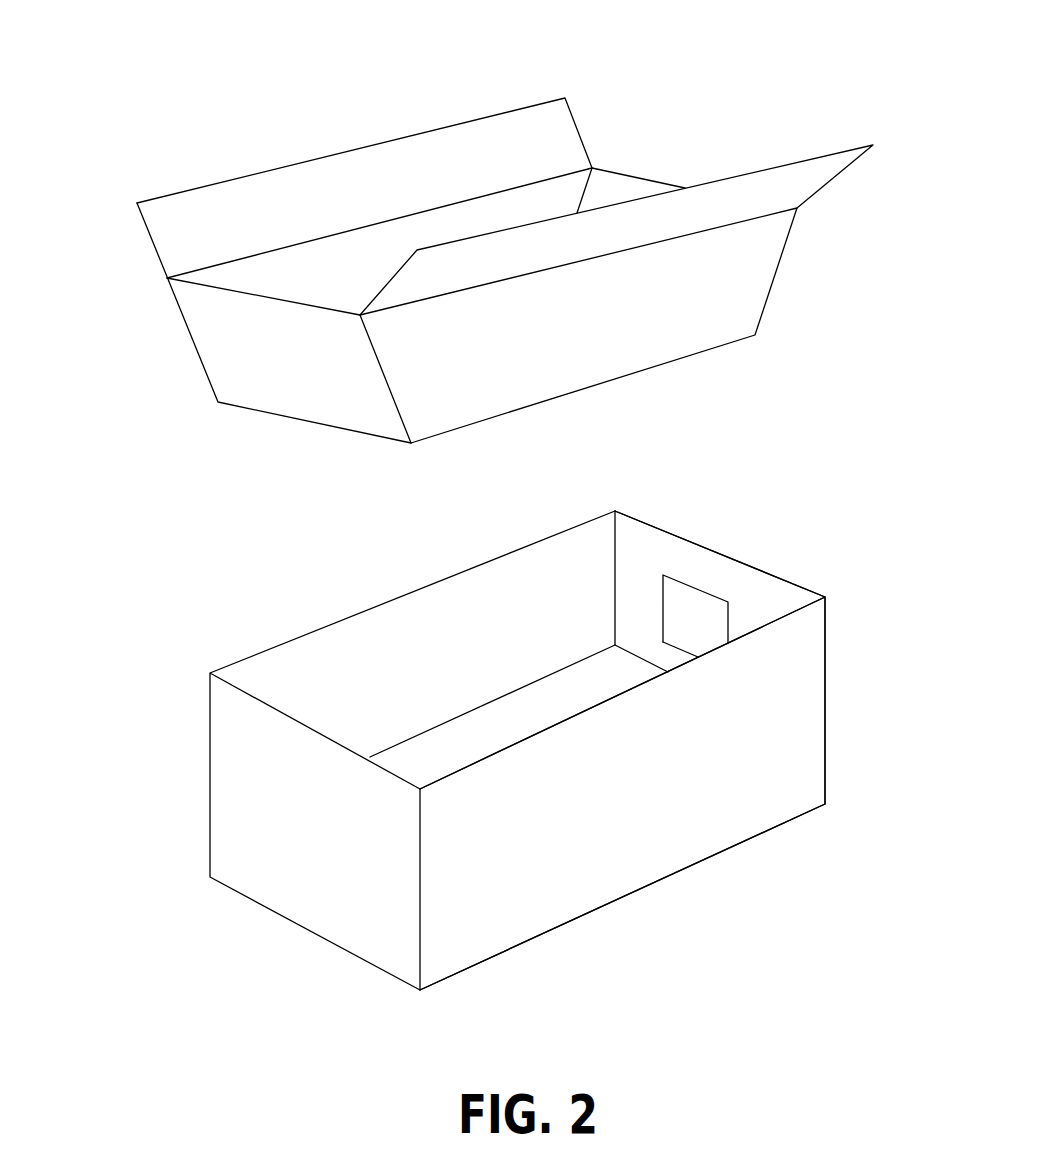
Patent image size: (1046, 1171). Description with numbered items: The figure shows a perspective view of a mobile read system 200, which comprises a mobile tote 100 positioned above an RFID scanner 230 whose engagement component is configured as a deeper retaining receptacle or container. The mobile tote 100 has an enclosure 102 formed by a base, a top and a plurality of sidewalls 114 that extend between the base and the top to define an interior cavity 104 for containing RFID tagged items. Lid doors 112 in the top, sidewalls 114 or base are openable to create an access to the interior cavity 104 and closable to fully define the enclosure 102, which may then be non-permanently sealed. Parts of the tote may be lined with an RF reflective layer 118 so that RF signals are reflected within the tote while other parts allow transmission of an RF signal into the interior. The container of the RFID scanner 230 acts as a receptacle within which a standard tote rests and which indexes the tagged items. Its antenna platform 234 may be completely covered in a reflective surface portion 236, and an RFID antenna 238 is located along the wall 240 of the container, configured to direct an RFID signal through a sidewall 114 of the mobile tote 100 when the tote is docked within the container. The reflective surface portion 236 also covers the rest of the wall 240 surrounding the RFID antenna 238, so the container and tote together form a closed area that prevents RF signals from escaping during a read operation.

The mobile tote 100 is at (460, 222).
The enclosure 102 is at (643, 170).
The interior cavity 104 is at (253, 277).
The lid doors 112 is at (405, 190).
The sidewalls 114 is at (613, 313).
The RF reflective layer 118 is at (365, 281).
The mobile read system 200 is at (581, 678).
The RFID scanner 230 is at (725, 882).
The antenna platform 234 is at (422, 767).
The reflective surface portion 236 is at (495, 652).
The RFID antenna 238 is at (702, 617).
The wall 240 is at (593, 815).